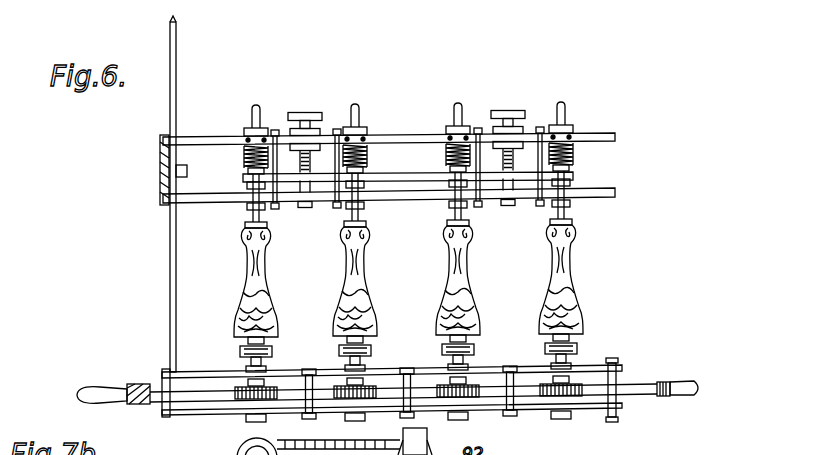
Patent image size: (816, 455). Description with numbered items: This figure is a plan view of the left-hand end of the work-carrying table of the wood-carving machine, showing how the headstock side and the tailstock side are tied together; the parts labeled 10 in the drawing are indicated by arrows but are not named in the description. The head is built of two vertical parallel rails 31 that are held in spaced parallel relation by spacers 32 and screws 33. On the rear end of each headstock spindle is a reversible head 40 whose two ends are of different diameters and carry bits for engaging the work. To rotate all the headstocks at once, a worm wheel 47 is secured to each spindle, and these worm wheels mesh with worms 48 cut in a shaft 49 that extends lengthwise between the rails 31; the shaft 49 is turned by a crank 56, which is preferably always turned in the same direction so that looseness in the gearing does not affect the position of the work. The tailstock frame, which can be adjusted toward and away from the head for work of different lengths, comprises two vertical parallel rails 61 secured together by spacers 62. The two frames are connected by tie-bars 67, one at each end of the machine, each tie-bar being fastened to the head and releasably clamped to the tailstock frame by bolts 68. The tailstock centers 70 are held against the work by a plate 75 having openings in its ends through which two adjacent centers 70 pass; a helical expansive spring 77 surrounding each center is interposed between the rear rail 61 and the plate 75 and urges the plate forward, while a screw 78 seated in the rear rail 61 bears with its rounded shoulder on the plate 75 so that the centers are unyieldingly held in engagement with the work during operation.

The needle rod 10 is at (224, 184).
The vertical parallel rails 31 is at (621, 367).
The spacers 32 is at (622, 378).
The screws 33 is at (609, 358).
The reversible head 40 is at (582, 344).
The worm wheel 47 is at (483, 398).
The worms 48 is at (666, 396).
The shaft 49 is at (700, 388).
The crank 56 is at (110, 385).
The vertical parallel rails 61 is at (598, 188).
The spacers 62 is at (538, 184).
The tie-bars 67 is at (170, 298).
The bolts 68 is at (190, 204).
The tailstock centers 70 is at (258, 106).
The plate 75 is at (290, 183).
The helical expansive spring 77 is at (244, 159).
The screw 78 is at (309, 112).